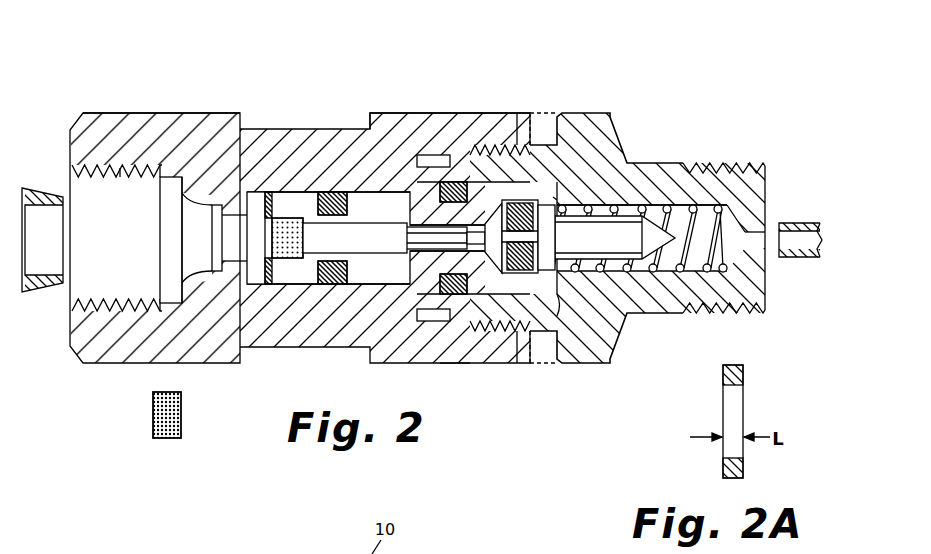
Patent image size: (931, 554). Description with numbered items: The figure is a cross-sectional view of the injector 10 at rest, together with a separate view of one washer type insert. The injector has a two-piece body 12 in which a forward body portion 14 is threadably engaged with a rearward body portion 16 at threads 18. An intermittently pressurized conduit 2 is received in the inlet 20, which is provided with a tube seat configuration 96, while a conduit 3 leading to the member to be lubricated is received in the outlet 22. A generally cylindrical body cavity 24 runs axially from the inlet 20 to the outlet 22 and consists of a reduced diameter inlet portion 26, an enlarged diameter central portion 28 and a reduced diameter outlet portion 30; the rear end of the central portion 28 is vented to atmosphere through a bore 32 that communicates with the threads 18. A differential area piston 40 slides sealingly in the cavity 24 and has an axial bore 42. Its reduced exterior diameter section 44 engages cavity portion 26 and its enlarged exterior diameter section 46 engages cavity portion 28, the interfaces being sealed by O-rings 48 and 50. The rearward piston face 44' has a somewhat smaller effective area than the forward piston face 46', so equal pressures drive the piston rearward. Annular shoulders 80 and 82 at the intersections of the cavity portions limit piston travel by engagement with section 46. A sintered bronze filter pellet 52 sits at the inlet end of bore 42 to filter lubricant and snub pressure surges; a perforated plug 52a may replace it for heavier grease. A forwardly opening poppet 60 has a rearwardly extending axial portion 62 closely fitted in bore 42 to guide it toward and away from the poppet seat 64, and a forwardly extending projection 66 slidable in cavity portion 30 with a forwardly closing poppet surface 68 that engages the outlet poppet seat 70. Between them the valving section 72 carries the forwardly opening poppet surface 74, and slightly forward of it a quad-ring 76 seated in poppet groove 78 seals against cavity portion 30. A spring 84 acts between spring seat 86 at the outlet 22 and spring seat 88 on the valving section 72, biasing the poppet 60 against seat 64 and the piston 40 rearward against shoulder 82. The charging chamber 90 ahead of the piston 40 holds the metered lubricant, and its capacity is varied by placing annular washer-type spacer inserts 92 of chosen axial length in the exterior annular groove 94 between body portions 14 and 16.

In FIG. 2, the intermittently pressurized conduit 2 is at (40, 188).
In FIG. 2, the conduit 3 is at (805, 227).
In FIG. 2, the injector 10 is at (336, 98).
In FIG. 2, the two-piece body 12 is at (445, 110).
In FIG. 2, the forward body portion 14 is at (594, 113).
In FIG. 2, the rearward body portion 16 is at (405, 113).
In FIG. 2, the threads 18 is at (512, 125).
In FIG. 2, the inlet 20 is at (155, 238).
In FIG. 2, the outlet 22 is at (740, 246).
In FIG. 2, the body cavity 24 is at (213, 200).
In FIG. 2, the reduced diameter inlet portion 26 is at (350, 190).
In FIG. 2, the enlarged diameter central portion 28 is at (562, 292).
In FIG. 2, the reduced diameter outlet portion 30 is at (652, 206).
In FIG. 2, the bore 32 is at (481, 128).
In FIG. 2, the differential area piston 40 is at (397, 197).
In FIG. 2, the axial bore 42 is at (355, 238).
In FIG. 2, the reduced exterior diameter section 44 is at (273, 214).
In FIG. 2, the rearward piston face 44' is at (215, 248).
In FIG. 2, the enlarged exterior diameter section 46 is at (477, 177).
In FIG. 2, the forward piston face 46' is at (483, 332).
In FIG. 2, the O-ring 48 is at (328, 286).
In FIG. 2, the O-ring 50 is at (455, 350).
In FIG. 2, the sintered bronze filter pellet 52 is at (287, 258).
In FIG. 2, the filter material 52a is at (183, 429).
In FIG. 2, the poppet 60 is at (566, 195).
In FIG. 2, the rearwardly extending axial portion 62 is at (410, 237).
In FIG. 2, the poppet seat 64 is at (478, 286).
In FIG. 2, the forwardly extending projection 66 is at (615, 237).
In FIG. 2, the forwardly closing poppet surface 68 is at (666, 262).
In FIG. 2, the outlet poppet seat 70 is at (746, 221).
In FIG. 2, the valving section 72 is at (531, 130).
In FIG. 2, the forwardly opening poppet surface 74 is at (466, 201).
In FIG. 2, the quad-ring 76 is at (529, 192).
In FIG. 2, the poppet groove 78 is at (520, 237).
In FIG. 2, the annular shoulder 80 is at (578, 204).
In FIG. 2, the annular shoulder 82 is at (413, 289).
In FIG. 2, the spring 84 is at (697, 208).
In FIG. 2, the spring seat 86 is at (745, 200).
In FIG. 2, the spring seat 88 is at (576, 279).
In FIG. 2, the charging chamber 90 is at (558, 190).
In FIG. 2, the annular washer-type spacer insert 92 is at (122, 171).
In FIG. 2A, the annular washer-type spacer insert 92 is at (745, 375).
In FIG. 2, the exterior annular groove 94 is at (550, 125).
In FIG. 2, the tube seat configuration 96 is at (185, 213).